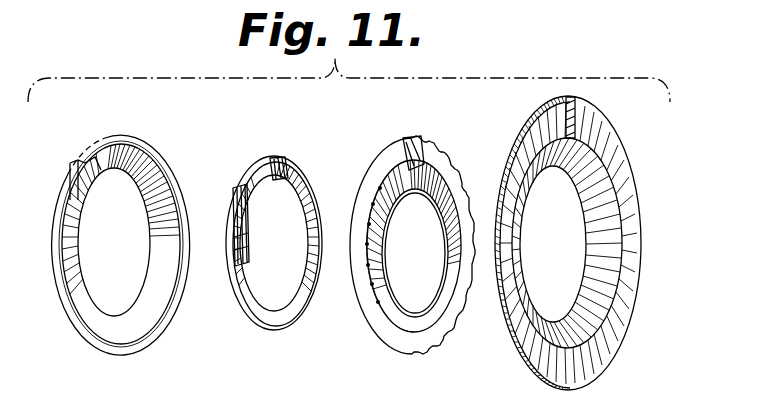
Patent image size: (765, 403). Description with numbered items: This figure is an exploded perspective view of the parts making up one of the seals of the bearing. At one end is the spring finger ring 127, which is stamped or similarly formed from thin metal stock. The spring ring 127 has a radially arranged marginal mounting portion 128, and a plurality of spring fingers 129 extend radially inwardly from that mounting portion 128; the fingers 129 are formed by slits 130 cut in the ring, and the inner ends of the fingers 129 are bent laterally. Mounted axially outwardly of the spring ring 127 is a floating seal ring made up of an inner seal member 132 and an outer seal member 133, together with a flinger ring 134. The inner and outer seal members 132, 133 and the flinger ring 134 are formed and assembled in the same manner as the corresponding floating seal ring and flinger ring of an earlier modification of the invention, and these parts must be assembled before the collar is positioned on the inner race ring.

The spring finger ring 127 is at (594, 243).
The marginal mounting portion 128 is at (612, 136).
The spring fingers 129 is at (612, 184).
The slits 130 is at (594, 247).
The inner seal member 132 is at (447, 160).
The outer seal member 133 is at (168, 152).
The flinger ring 134 is at (284, 322).